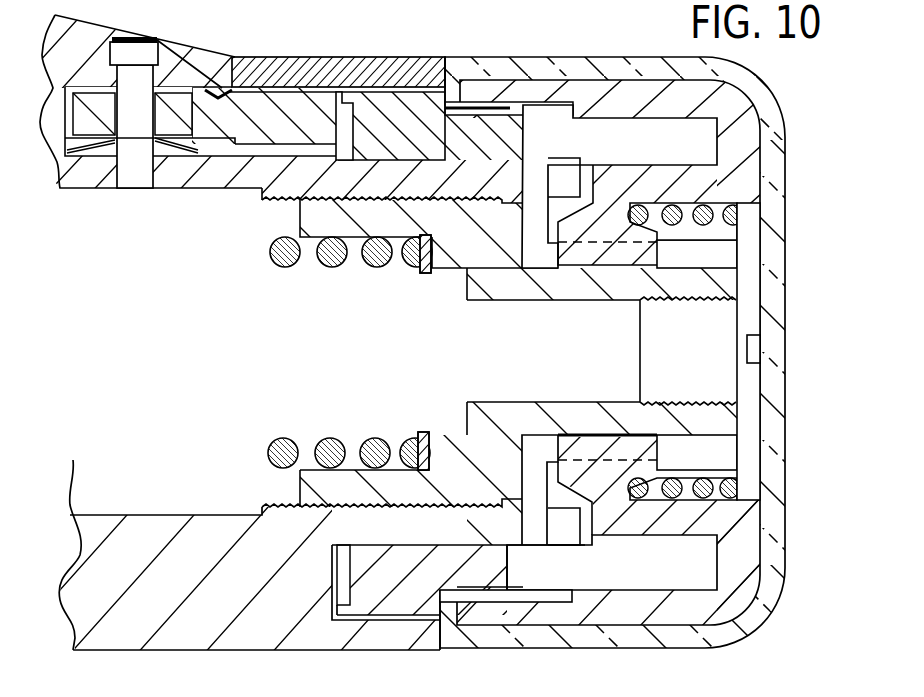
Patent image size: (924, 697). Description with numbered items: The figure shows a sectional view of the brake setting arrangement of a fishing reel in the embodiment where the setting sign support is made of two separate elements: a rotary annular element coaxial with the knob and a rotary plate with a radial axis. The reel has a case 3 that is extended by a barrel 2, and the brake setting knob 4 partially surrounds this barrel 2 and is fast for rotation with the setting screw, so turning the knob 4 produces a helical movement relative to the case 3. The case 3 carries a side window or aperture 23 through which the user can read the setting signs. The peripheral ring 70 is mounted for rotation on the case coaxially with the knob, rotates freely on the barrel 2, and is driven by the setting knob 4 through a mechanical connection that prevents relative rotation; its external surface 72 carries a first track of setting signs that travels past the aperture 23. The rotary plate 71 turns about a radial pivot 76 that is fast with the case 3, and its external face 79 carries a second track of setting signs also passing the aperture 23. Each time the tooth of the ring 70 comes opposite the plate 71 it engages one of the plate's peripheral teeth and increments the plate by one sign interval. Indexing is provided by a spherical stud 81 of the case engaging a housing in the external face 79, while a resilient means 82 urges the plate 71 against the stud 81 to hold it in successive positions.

The barrel 2 is at (407, 523).
The case 3 is at (73, 183).
The brake setting knob 4 is at (745, 623).
The side window or aperture 23 is at (333, 64).
The peripheral ring 70 is at (350, 163).
The rotary plate 71 is at (240, 150).
The external surface 72 is at (415, 100).
The radial pivot 76 is at (132, 177).
The external face 79 is at (263, 162).
The spherical stud 81 is at (200, 140).
The resilient means 82 is at (92, 157).